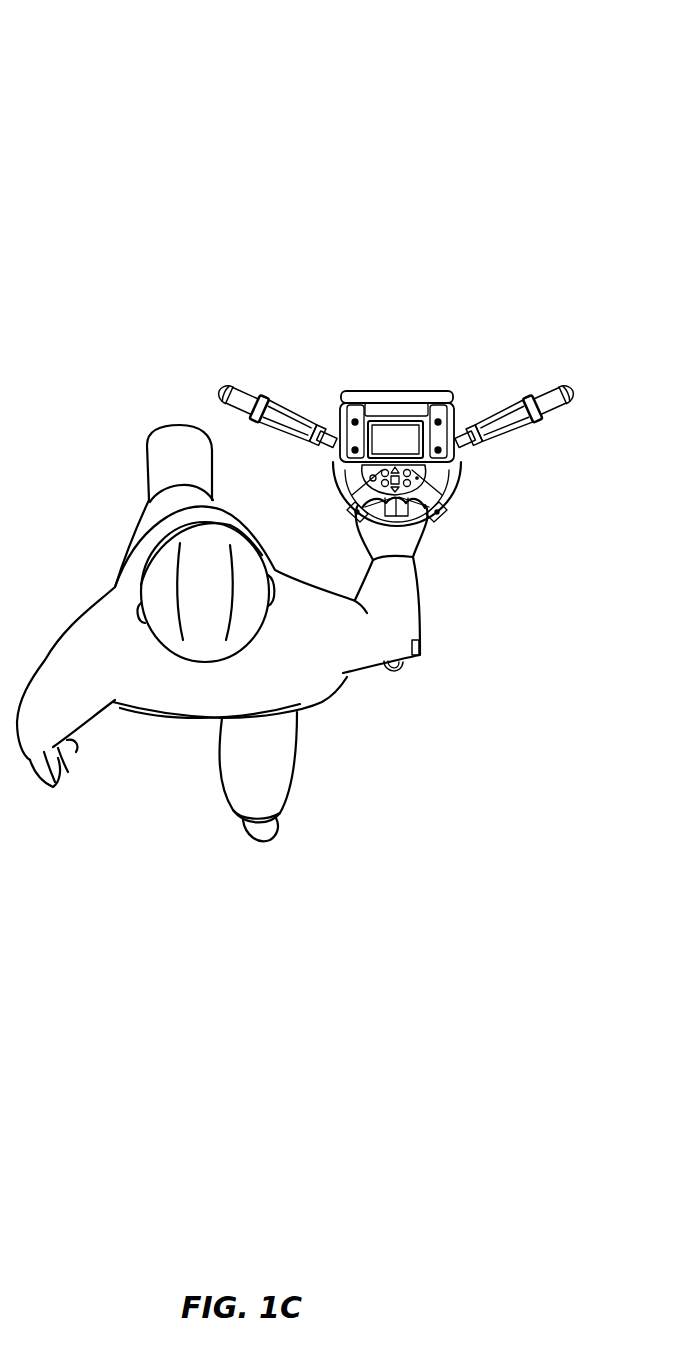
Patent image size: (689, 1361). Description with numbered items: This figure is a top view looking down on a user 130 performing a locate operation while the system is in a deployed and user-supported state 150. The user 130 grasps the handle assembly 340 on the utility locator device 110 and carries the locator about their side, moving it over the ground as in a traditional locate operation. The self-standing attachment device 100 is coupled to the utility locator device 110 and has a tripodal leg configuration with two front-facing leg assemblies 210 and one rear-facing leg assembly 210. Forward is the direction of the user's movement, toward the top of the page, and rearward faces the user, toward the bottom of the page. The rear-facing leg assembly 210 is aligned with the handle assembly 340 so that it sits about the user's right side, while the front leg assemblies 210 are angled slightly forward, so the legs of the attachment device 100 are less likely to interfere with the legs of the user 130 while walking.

The deployed and user-supported state 150 is at (408, 84).
The self-standing attachment device 100 is at (327, 430).
The utility locator device 110 is at (393, 387).
The leg assembly 210 is at (223, 378).
The handle assembly 340 is at (430, 648).
The user 130 is at (343, 673).